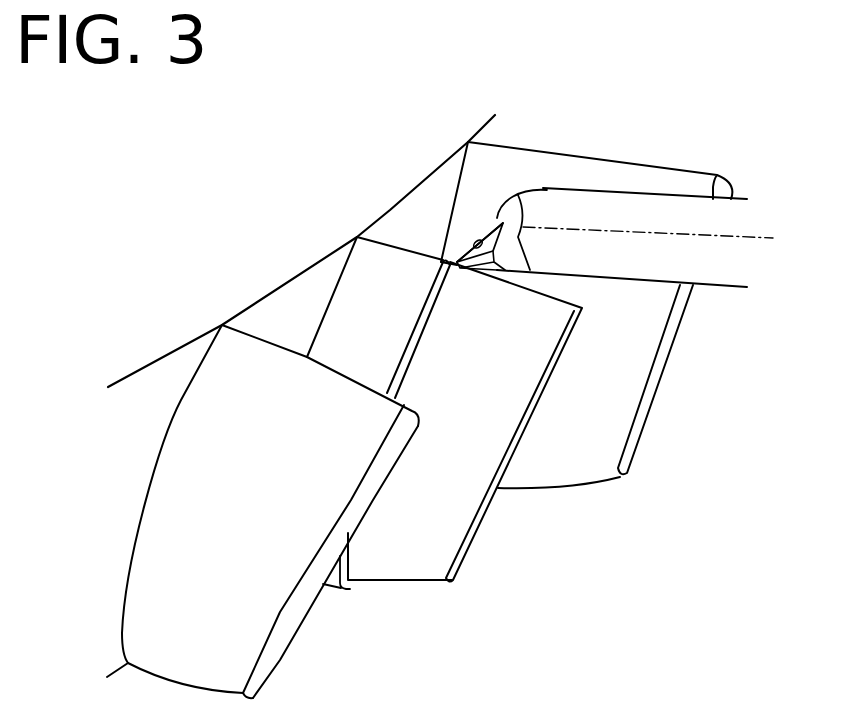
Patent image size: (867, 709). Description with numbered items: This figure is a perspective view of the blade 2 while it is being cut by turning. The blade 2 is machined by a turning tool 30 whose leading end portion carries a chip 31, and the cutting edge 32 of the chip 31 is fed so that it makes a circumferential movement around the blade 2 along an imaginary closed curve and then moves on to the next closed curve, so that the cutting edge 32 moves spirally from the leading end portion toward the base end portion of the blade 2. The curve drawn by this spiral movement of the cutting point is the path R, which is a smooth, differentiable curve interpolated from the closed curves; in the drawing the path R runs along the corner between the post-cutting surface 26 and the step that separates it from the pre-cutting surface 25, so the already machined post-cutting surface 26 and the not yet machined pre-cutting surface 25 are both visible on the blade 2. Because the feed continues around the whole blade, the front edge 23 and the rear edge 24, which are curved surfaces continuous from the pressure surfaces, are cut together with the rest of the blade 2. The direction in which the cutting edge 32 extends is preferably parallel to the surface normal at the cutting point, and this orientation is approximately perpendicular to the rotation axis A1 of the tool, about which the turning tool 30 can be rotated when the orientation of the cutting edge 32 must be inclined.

The blade 2 is at (218, 387).
The front edge 23 is at (540, 293).
The rear edge 24 is at (412, 585).
The pre-cutting surface 25 is at (363, 322).
The post-cutting surface 26 is at (400, 547).
The turning tool 30 is at (735, 207).
The chip 31 is at (474, 230).
The cutting edge 32 is at (463, 237).
The rotation axis A1 is at (669, 238).
The path R is at (407, 367).